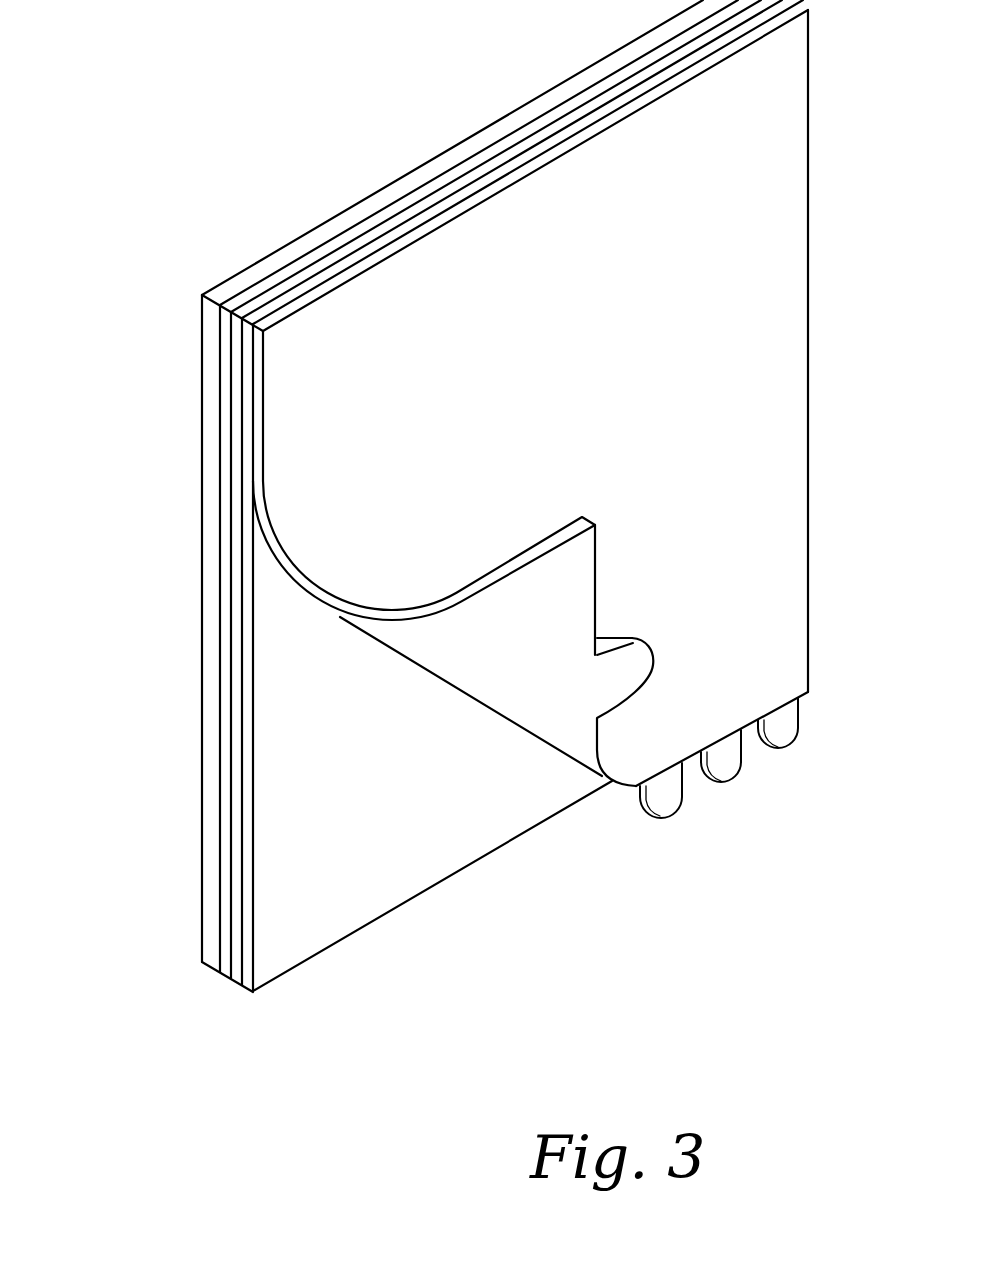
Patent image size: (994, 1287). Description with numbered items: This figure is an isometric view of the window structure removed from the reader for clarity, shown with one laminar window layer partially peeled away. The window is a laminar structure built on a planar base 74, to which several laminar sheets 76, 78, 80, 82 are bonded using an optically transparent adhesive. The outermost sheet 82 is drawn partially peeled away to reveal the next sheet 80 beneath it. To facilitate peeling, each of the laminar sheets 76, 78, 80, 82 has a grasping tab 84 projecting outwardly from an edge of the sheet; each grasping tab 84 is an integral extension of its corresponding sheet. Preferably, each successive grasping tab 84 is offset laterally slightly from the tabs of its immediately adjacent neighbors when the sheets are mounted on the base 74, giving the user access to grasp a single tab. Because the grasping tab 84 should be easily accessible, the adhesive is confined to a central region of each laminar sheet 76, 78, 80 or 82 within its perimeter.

The planar base 74 is at (204, 290).
The laminar sheet 76 is at (221, 309).
The laminar sheet 78 is at (246, 317).
The laminar sheet 80 is at (300, 925).
The outermost sheet 82 is at (568, 553).
The grasping tab 84 is at (655, 663).